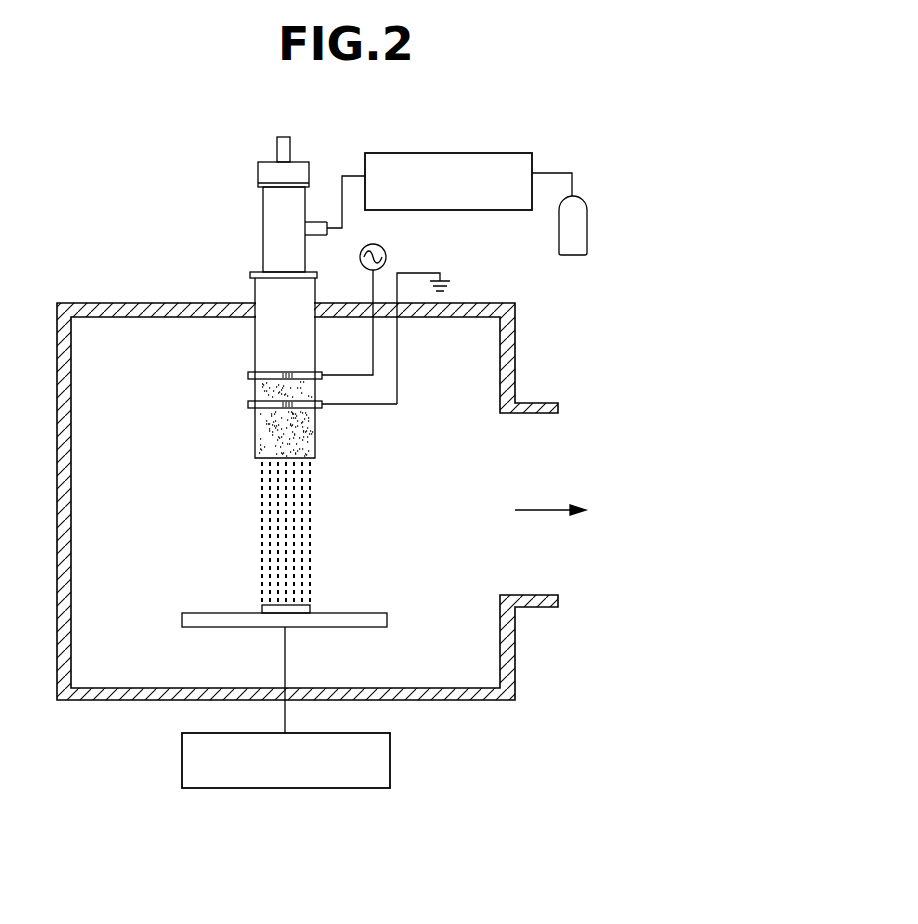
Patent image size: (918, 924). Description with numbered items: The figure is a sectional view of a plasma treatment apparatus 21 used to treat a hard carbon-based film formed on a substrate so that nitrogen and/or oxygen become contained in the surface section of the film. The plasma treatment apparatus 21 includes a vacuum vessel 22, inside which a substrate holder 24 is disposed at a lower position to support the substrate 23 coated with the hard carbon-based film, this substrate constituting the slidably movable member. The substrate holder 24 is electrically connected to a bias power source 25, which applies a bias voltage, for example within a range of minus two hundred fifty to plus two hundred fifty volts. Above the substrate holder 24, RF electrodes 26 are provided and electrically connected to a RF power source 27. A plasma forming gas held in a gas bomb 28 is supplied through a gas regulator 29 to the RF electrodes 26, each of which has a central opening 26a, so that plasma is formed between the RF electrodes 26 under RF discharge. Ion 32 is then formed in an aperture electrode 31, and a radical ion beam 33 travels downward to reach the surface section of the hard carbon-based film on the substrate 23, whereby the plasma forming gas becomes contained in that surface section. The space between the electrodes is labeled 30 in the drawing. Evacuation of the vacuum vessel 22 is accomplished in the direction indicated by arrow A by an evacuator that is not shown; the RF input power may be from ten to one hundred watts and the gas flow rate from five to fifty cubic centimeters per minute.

The plasma treatment apparatus 21 is at (155, 241).
The vacuum vessel 22 is at (113, 303).
The substrate 23 is at (298, 610).
The substrate holder 24 is at (387, 620).
The bias power source 25 is at (390, 758).
The RF electrodes 26 is at (248, 376).
The central opening 26a is at (287, 372).
The RF power source 27 is at (384, 250).
The gas bomb 28 is at (576, 232).
The gas regulator 29 is at (477, 153).
The discharge space 30 is at (262, 390).
The aperture electrode 31 is at (305, 463).
The ion 32 is at (303, 435).
The radical ion beam 33 is at (303, 533).